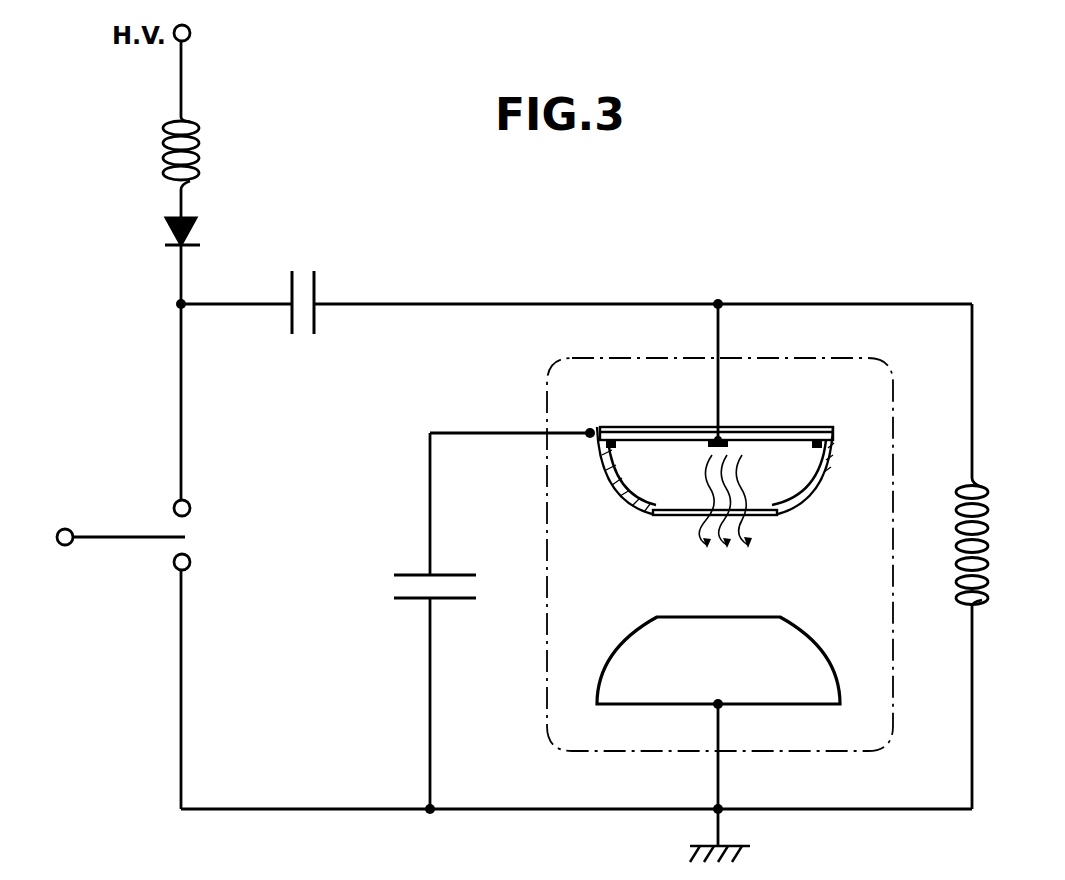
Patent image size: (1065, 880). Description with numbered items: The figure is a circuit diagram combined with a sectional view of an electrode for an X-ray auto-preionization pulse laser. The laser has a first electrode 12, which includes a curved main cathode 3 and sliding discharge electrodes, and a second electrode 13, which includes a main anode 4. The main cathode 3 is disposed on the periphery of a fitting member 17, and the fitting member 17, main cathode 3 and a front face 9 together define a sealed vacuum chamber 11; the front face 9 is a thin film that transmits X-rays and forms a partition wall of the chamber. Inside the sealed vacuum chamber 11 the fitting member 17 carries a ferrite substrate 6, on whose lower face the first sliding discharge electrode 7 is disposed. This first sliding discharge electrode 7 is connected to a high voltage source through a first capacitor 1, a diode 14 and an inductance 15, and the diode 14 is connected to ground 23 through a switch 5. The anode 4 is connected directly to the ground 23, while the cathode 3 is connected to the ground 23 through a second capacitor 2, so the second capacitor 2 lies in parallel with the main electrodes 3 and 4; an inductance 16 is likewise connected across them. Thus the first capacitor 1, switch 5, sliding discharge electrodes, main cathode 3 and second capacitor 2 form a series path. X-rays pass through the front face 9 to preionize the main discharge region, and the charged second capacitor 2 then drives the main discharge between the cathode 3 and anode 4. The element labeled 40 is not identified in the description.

The first capacitor 1 is at (318, 312).
The second capacitor 2 is at (422, 607).
The main cathode 3 is at (808, 487).
The main anode 4 is at (828, 660).
The switch 5 is at (172, 547).
The substrate 6 is at (792, 437).
The first sliding discharge electrode 7 is at (712, 447).
The front face 9 is at (757, 517).
The sealed vacuum chamber 11 is at (753, 456).
The first electrode 12 is at (858, 430).
The second electrode 13 is at (856, 712).
The diode 14 is at (194, 236).
The inductance 15 is at (200, 167).
The inductance 16 is at (985, 484).
The fitting member 17 is at (642, 427).
The ground 23 is at (750, 846).
The chamber wall 40 is at (893, 640).